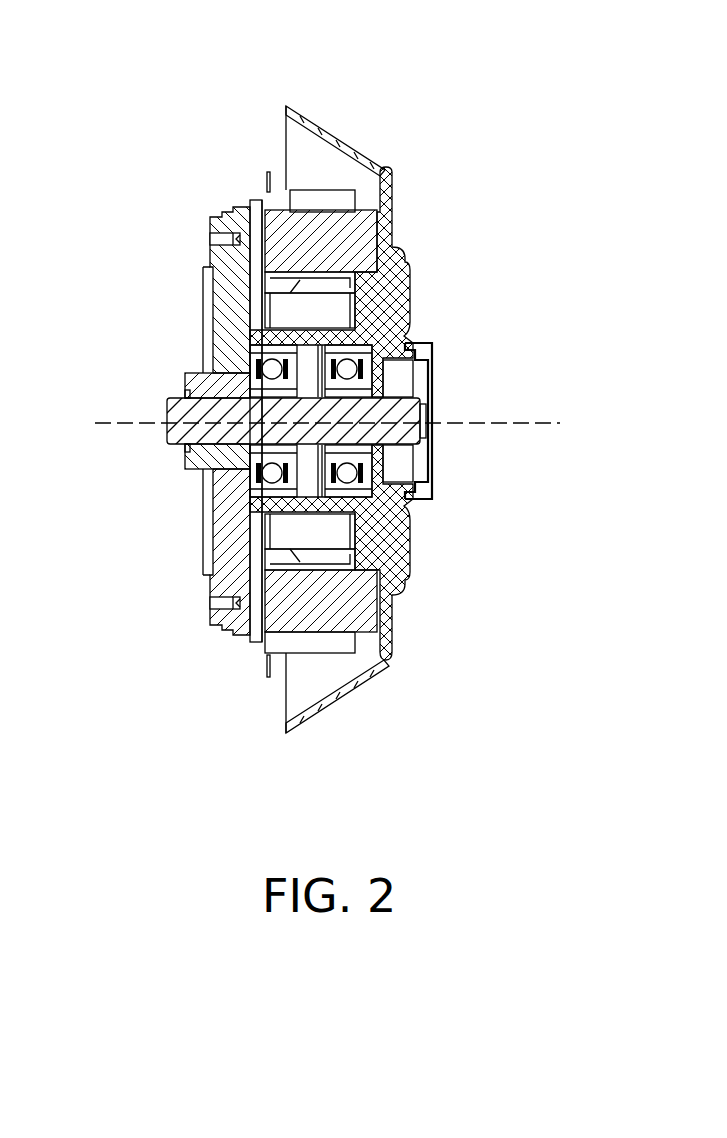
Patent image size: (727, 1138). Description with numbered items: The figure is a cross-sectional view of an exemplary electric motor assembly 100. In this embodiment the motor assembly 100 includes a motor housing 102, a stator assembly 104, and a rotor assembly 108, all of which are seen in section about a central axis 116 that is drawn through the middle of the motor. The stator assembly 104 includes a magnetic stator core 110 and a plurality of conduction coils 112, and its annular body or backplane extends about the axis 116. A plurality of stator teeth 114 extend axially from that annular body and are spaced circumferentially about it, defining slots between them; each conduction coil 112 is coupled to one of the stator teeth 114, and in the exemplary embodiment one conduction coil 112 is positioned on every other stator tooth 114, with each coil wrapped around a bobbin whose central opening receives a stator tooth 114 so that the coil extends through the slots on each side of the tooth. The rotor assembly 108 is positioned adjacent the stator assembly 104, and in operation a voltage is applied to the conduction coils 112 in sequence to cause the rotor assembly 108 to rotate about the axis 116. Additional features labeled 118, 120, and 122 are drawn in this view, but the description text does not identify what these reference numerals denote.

The electric motor assembly 100 is at (182, 102).
The motor housing 102 is at (412, 338).
The stator assembly 104 is at (373, 177).
The rotor assembly 108 is at (182, 203).
The magnetic stator core 110 is at (380, 640).
The conduction coil 112 is at (300, 645).
The stator tooth 114 is at (290, 252).
The axis 116 is at (512, 428).
The stator winding 118 is at (345, 197).
The plate 120 is at (275, 230).
The terminal pin 122 is at (288, 197).